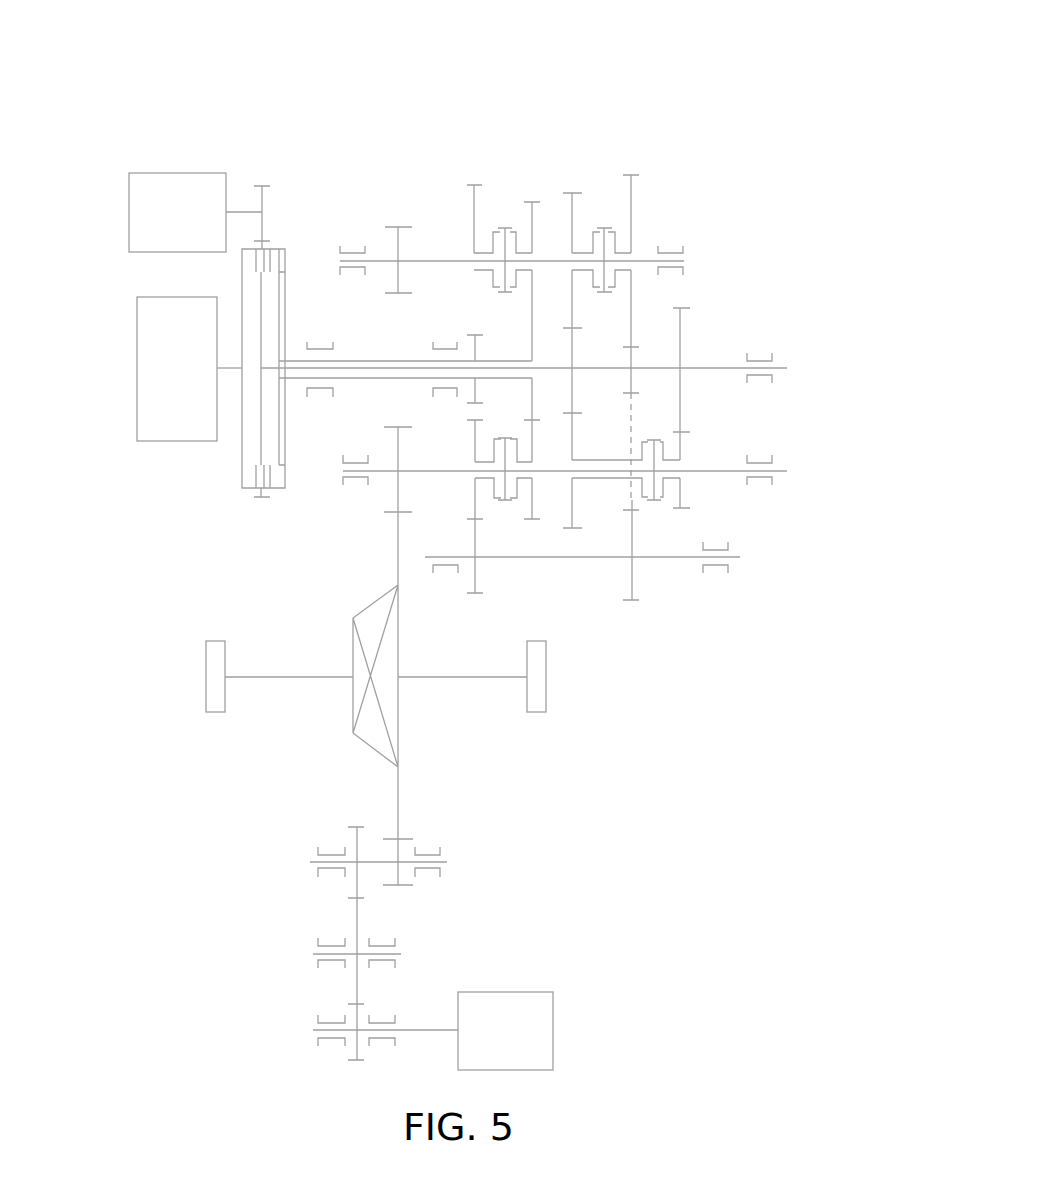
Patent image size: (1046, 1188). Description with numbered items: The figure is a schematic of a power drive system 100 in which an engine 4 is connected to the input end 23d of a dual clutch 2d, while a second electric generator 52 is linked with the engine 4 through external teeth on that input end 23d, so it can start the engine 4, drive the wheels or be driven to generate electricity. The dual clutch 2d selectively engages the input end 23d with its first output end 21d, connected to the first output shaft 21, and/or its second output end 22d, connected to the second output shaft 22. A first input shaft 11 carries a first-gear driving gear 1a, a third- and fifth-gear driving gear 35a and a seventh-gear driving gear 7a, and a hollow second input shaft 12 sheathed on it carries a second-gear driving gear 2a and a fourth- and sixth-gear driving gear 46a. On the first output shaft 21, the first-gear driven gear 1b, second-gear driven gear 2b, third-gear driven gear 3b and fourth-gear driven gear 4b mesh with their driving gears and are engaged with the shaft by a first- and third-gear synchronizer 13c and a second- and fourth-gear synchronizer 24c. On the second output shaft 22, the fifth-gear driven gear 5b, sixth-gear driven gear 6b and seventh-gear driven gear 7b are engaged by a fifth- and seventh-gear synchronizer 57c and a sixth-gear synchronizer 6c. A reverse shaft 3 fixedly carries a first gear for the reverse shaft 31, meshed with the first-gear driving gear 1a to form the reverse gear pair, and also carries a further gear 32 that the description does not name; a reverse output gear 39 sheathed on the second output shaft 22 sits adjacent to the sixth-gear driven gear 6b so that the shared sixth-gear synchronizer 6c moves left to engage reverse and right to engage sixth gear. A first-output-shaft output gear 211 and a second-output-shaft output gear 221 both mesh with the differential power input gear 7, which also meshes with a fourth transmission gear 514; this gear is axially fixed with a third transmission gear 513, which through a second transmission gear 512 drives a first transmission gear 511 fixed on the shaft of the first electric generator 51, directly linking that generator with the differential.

The power drive system 100 is at (476, 130).
The second electric generator 52 is at (148, 218).
The engine 4 is at (151, 306).
The dual clutch 2d is at (191, 408).
The input end 23d is at (242, 428).
The first output end 21d is at (261, 440).
The second output end 22d is at (285, 457).
The first output shaft 21 is at (685, 258).
The second input shaft 12 is at (365, 360).
The first input shaft 11 is at (787, 368).
The second output shaft 22 is at (780, 471).
The reverse shaft 3 is at (740, 556).
The first-output-shaft output gear 211 is at (393, 227).
The second-gear driven gear 2b is at (468, 185).
The fourth-gear driven gear 4b is at (527, 202).
The second- and fourth-gear synchronizer 24c is at (503, 228).
The third-gear driven gear 3b is at (573, 192).
The first-gear driven gear 1b is at (637, 173).
The first- and third-gear synchronizer 13c is at (605, 228).
The second-gear driving gear 2a is at (473, 345).
The fourth- and sixth-gear driving gear 46a is at (530, 335).
The sixth-gear driven gear 6b is at (532, 432).
The reverse output gear 39 is at (475, 453).
The sixth-gear synchronizer 6c is at (505, 500).
The third- and fifth-gear driving gear 35a is at (573, 350).
The fifth-gear driven gear 5b is at (573, 445).
The first-gear driving gear 1a is at (632, 357).
The seventh-gear driving gear 7a is at (682, 337).
The seventh-gear driven gear 7b is at (680, 445).
The fifth- and seventh-gear synchronizer 57c is at (653, 483).
The second-output-shaft output gear 221 is at (397, 427).
The reverse output gear 32 is at (473, 578).
The first gear for the reverse shaft 31 is at (633, 602).
The differential power input gear 7 is at (398, 818).
The fourth transmission gear 514 is at (399, 870).
The third transmission gear 513 is at (353, 843).
The second transmission gear 512 is at (355, 937).
The first transmission gear 511 is at (357, 1022).
The first electric generator 51 is at (523, 1040).